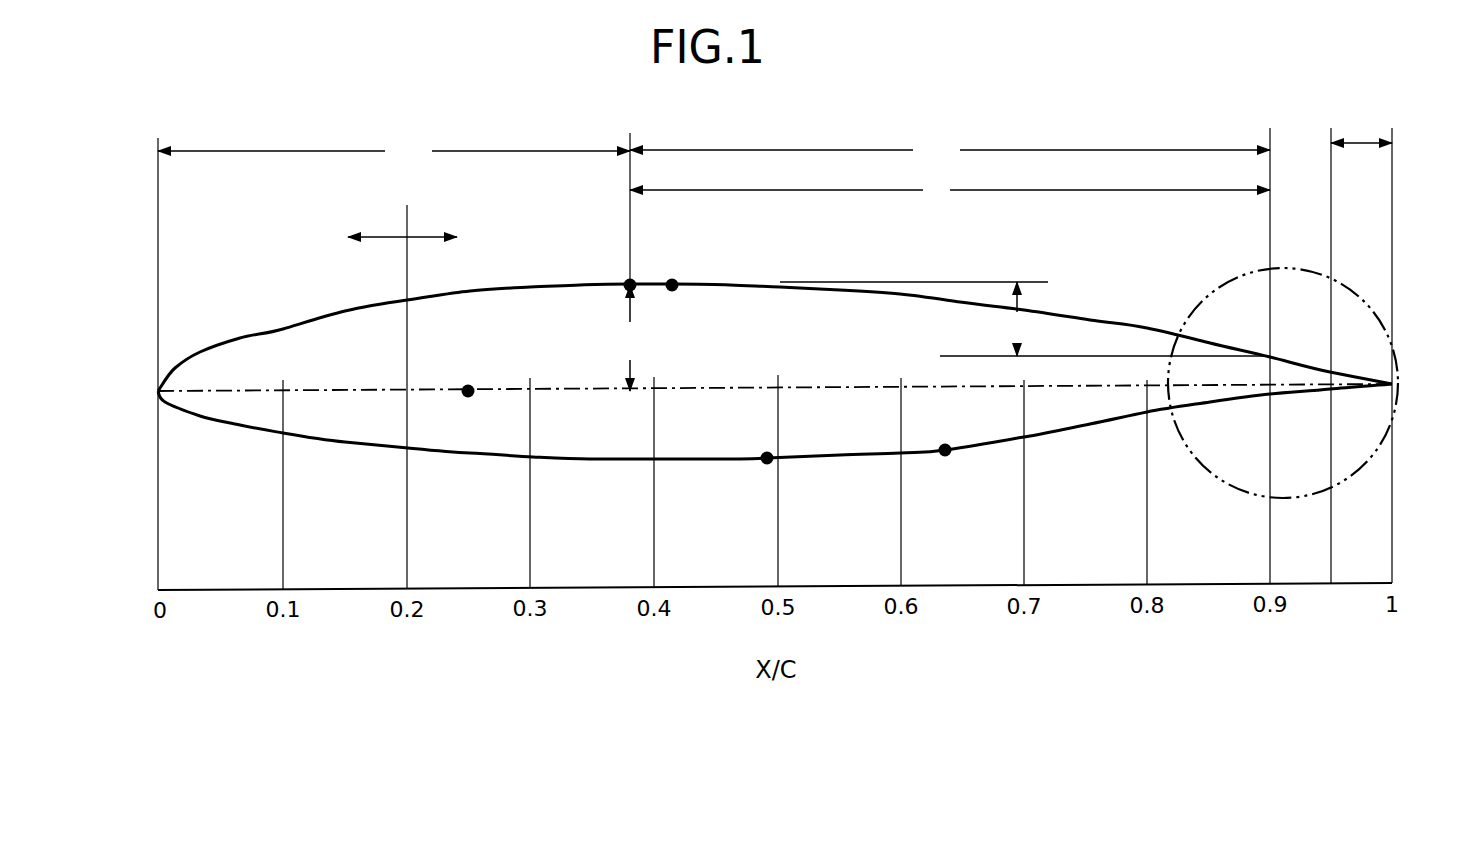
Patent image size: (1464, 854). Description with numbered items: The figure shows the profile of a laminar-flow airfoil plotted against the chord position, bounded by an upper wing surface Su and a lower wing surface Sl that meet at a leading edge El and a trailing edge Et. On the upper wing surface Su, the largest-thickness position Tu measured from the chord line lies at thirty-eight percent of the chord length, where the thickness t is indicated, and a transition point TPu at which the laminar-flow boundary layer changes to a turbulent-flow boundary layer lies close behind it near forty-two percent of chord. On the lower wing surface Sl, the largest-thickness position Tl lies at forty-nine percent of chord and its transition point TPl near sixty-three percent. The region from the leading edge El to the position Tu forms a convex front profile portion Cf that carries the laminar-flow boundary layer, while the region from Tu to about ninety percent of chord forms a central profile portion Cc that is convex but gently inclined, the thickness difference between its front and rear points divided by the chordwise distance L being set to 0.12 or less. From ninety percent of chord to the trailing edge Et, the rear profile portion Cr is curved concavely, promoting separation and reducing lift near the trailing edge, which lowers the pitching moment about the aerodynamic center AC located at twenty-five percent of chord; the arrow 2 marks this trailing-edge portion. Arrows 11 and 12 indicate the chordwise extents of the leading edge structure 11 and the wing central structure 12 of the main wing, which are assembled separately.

The arrow indicating trailing edge portion 2 is at (1205, 297).
The leading edge structure 11 is at (360, 239).
The wing central structure 12 is at (449, 239).
The upper wing surface Su is at (744, 283).
The lower wing surface Sl is at (733, 462).
The largest-thickness position on the upper wing surface Tu is at (629, 280).
The transition point on the upper wing surface TPu is at (672, 280).
The largest-thickness position on the lower wing surface Tl is at (768, 462).
The transition point on the lower wing surface TPl is at (945, 455).
The aerodynamic center AC is at (468, 396).
The leading edge El is at (158, 392).
The trailing edge Et is at (1395, 383).
The front profile portion Cf is at (394, 155).
The central profile portion Cc is at (950, 150).
The rear profile portion Cr is at (1361, 130).
The distance in the wing chord direction L is at (950, 192).
The thickness t is at (628, 338).